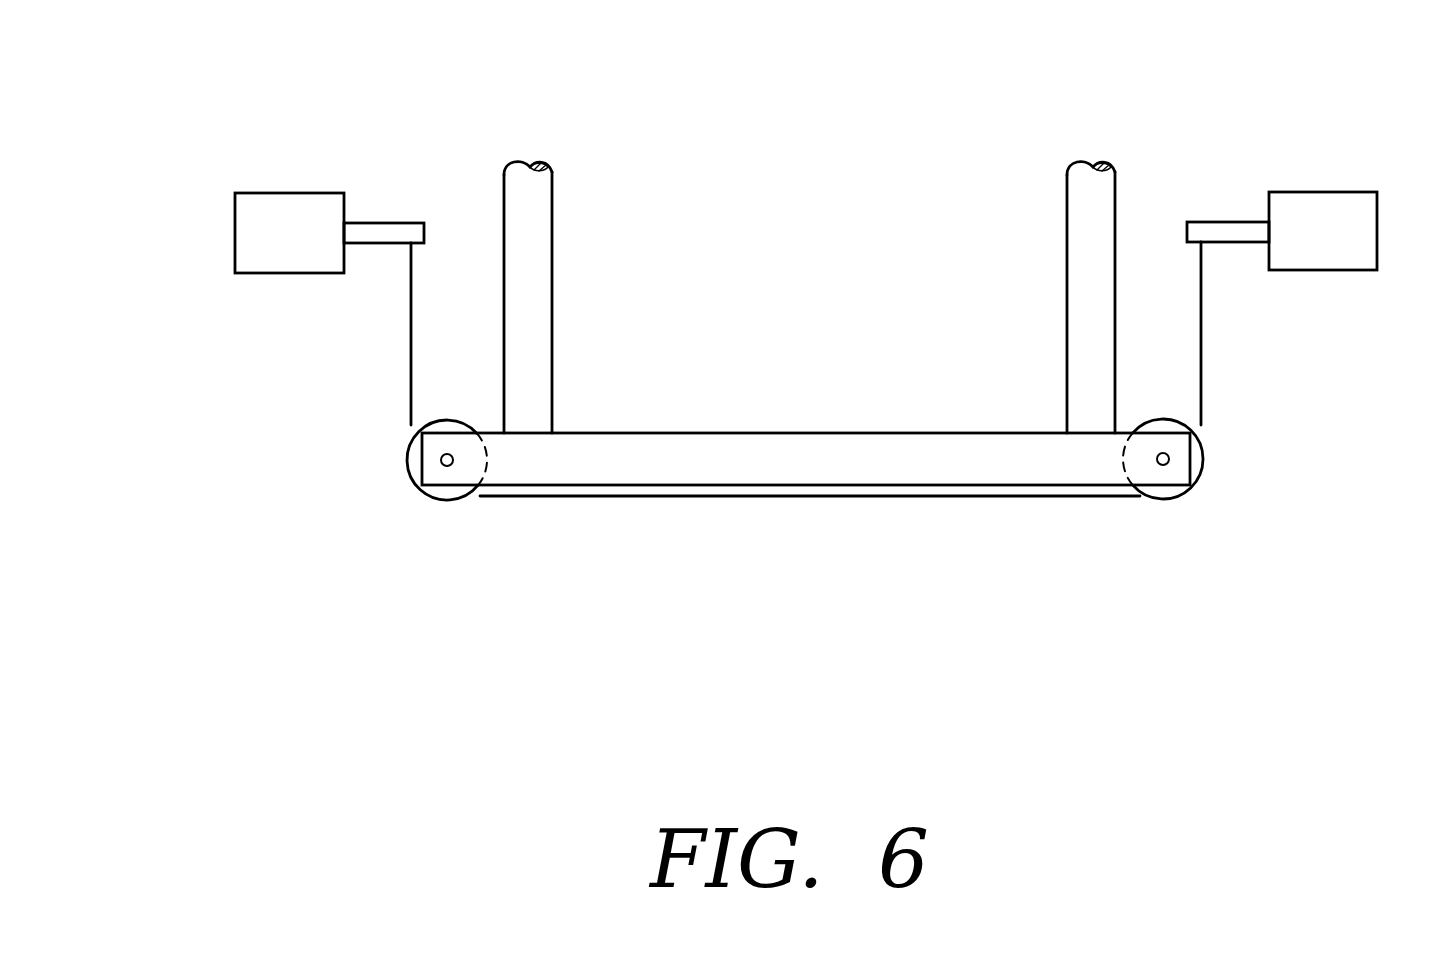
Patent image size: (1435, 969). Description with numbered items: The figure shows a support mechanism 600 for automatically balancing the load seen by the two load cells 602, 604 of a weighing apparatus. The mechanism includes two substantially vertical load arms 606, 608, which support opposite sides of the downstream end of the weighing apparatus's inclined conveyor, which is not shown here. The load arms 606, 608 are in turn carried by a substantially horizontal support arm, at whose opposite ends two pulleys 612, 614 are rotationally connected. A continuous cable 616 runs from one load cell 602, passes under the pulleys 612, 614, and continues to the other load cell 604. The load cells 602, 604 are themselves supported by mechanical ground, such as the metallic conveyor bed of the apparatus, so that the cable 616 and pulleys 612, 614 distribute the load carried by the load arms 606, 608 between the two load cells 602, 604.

The support mechanism 600 is at (1362, 48).
The load cell 602 is at (297, 273).
The load cell 604 is at (1323, 270).
The load arm 606 is at (552, 323).
The load arm 608 is at (1067, 307).
The pulley 612 is at (440, 500).
The pulley 614 is at (1163, 499).
The cable 616 is at (782, 496).